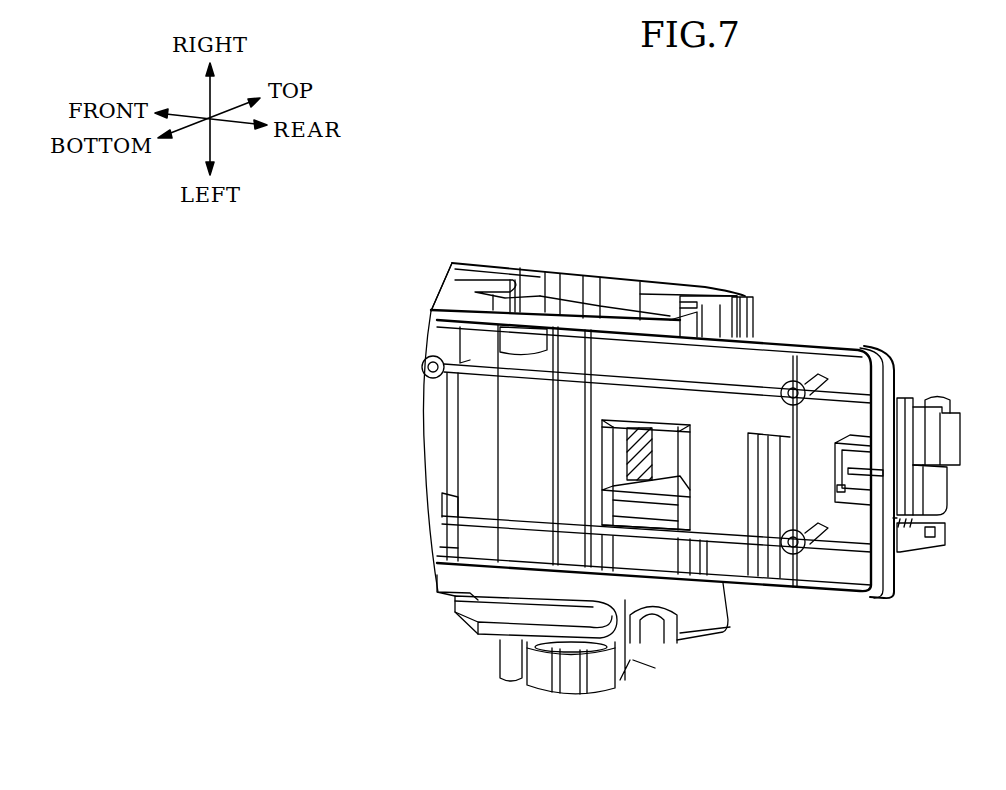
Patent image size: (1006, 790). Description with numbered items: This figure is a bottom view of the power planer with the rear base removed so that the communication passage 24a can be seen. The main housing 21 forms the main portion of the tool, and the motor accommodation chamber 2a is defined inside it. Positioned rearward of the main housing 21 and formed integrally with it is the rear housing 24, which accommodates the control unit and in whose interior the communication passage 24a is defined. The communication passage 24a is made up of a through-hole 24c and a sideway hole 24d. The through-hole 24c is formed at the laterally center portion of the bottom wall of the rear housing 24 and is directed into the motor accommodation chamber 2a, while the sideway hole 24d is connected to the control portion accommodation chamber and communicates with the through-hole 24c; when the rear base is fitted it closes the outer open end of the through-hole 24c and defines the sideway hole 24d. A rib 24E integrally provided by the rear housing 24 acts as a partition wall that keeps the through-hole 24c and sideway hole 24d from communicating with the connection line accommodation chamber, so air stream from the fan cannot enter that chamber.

The main housing 21 is at (756, 296).
The rear housing 24 is at (887, 552).
The rib 24E is at (661, 442).
The motor accommodation chamber 2a is at (650, 475).
The through-hole 24c is at (643, 488).
The sideway hole 24d is at (667, 460).
The communication passage 24a is at (848, 700).